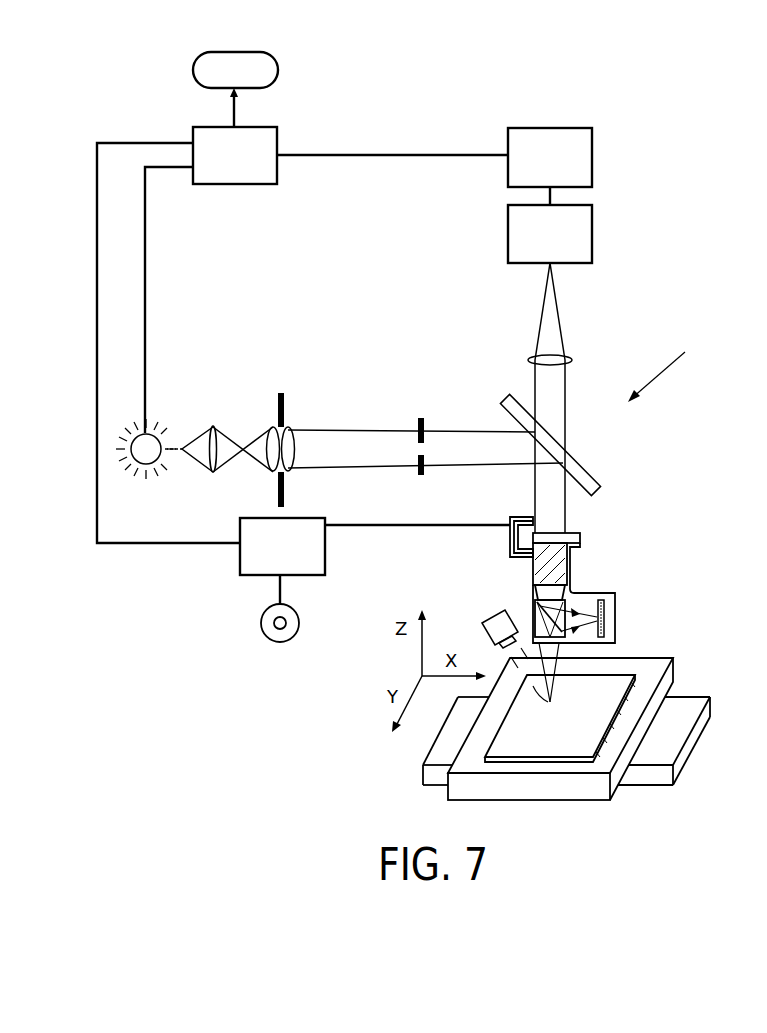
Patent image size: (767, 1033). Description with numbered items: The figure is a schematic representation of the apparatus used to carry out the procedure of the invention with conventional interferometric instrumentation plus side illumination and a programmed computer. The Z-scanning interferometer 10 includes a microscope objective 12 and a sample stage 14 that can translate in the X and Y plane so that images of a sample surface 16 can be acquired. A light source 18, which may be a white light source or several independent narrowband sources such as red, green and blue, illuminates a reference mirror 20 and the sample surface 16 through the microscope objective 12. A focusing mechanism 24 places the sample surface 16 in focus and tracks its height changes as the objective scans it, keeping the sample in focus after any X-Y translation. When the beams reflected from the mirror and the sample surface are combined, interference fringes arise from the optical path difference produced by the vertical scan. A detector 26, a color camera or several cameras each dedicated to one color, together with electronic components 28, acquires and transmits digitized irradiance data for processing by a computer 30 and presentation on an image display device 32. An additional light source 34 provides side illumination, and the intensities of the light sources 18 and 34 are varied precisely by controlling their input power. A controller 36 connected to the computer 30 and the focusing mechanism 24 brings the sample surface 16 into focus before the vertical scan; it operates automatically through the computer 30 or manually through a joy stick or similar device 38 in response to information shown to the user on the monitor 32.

The Z-scanning interferometer 10 is at (672, 372).
The microscope objective 12 is at (568, 555).
The sample stage 14 is at (650, 717).
The sample surface 16 is at (620, 685).
The light source 18 is at (160, 432).
The reference mirror 20 is at (620, 638).
The focusing mechanism 24 is at (510, 538).
The detector 26 is at (508, 232).
The electronic components 28 is at (587, 171).
The computer 30 is at (268, 143).
The image display device 32 is at (260, 73).
The additional light source 34 is at (487, 620).
The controller 36 is at (253, 565).
The joy stick 38 is at (293, 627).